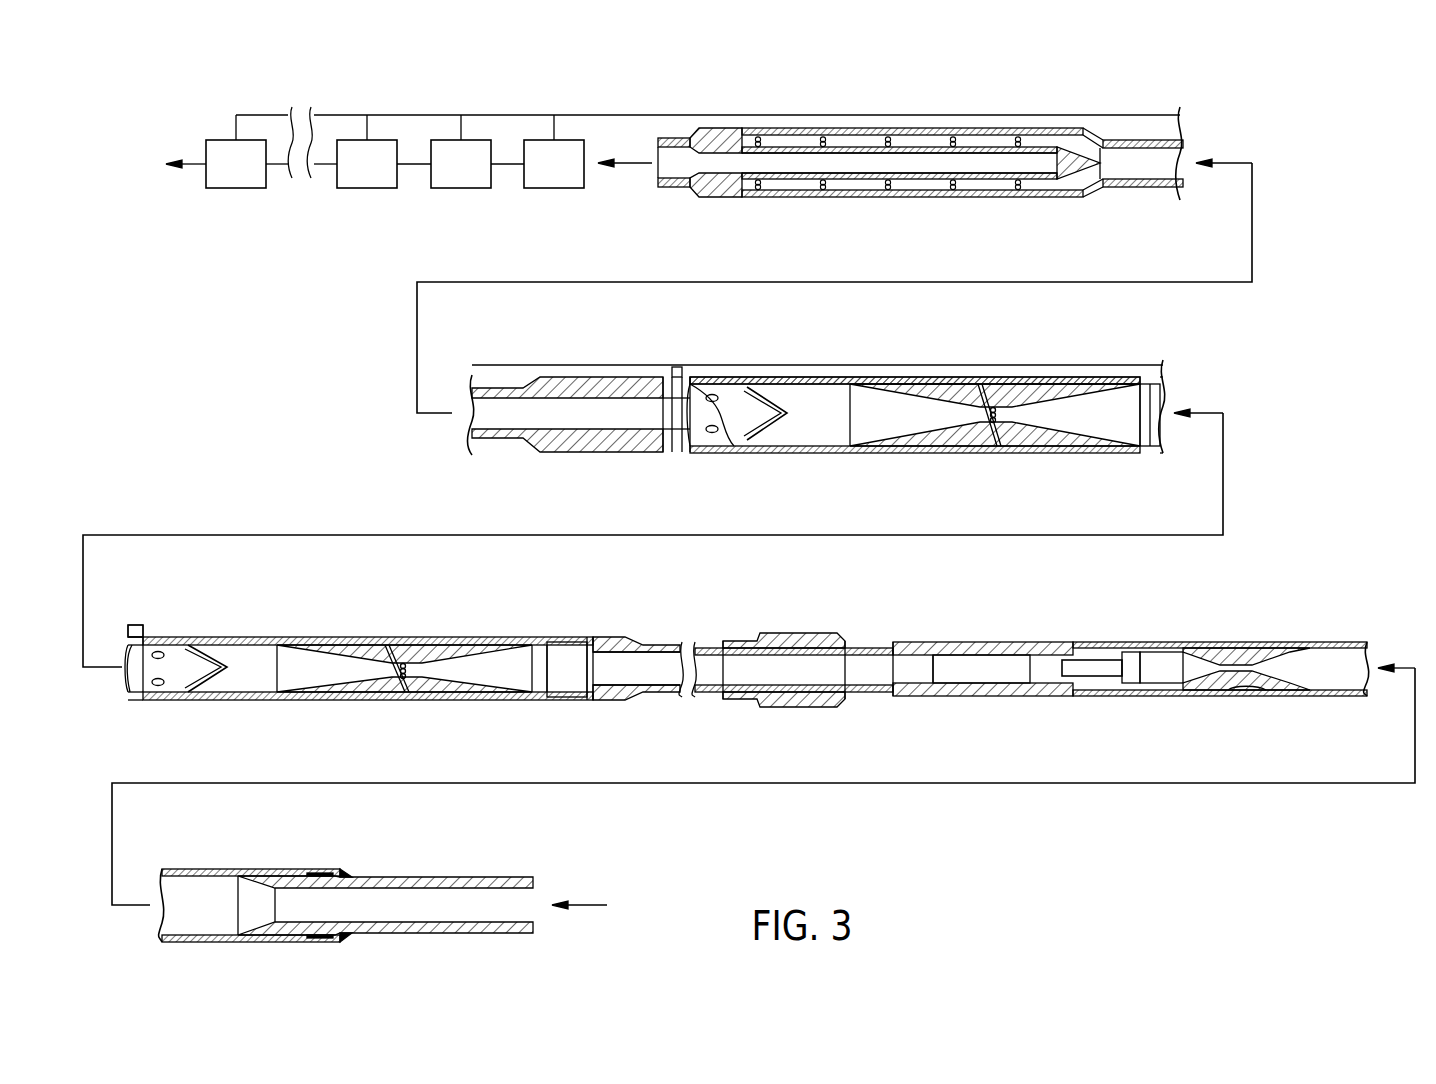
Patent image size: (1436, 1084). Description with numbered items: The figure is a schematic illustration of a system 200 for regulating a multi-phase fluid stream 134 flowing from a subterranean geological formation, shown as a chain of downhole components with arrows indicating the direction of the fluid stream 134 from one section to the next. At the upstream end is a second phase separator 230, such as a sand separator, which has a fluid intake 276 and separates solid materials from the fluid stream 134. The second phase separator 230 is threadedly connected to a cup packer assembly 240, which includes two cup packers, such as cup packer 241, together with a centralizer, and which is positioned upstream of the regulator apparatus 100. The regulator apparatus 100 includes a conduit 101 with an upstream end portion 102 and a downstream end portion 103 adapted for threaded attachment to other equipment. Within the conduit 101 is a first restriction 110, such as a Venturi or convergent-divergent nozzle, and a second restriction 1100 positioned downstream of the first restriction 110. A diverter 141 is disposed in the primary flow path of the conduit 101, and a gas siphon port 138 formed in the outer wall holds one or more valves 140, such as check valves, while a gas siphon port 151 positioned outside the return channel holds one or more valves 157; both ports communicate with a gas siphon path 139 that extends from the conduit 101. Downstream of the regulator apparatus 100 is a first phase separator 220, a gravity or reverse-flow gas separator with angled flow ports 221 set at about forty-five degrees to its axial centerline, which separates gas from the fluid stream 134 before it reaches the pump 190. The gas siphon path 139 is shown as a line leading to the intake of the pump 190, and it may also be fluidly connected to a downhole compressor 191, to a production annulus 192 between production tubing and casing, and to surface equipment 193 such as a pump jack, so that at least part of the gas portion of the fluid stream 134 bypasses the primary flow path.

The regulator apparatus 100 is at (1018, 377).
The conduit 101 is at (962, 377).
The upstream end portion 102 is at (641, 641).
The downstream end portion 103 is at (662, 380).
The first restriction 110 is at (364, 652).
The fluid stream 134 is at (633, 165).
The gas siphon port 138 is at (674, 370).
The gas siphon path 139 is at (427, 113).
The valves 140 is at (678, 452).
The diverter 141 is at (782, 418).
The gas siphon port 151 is at (697, 385).
The valves 157 is at (725, 446).
The pump 190 is at (536, 176).
The downhole compressor 191 is at (443, 176).
The production annulus 192 is at (349, 176).
The surface equipment 193 is at (218, 176).
The system 200 is at (512, 338).
The first phase separator 220 is at (875, 128).
The angled flow ports 221 is at (810, 128).
The second phase separator 230 is at (201, 867).
The cup packer assembly 240 is at (954, 641).
The cup packer 241 is at (799, 632).
The fluid intake 276 is at (1246, 694).
The second restriction 1100 is at (936, 390).